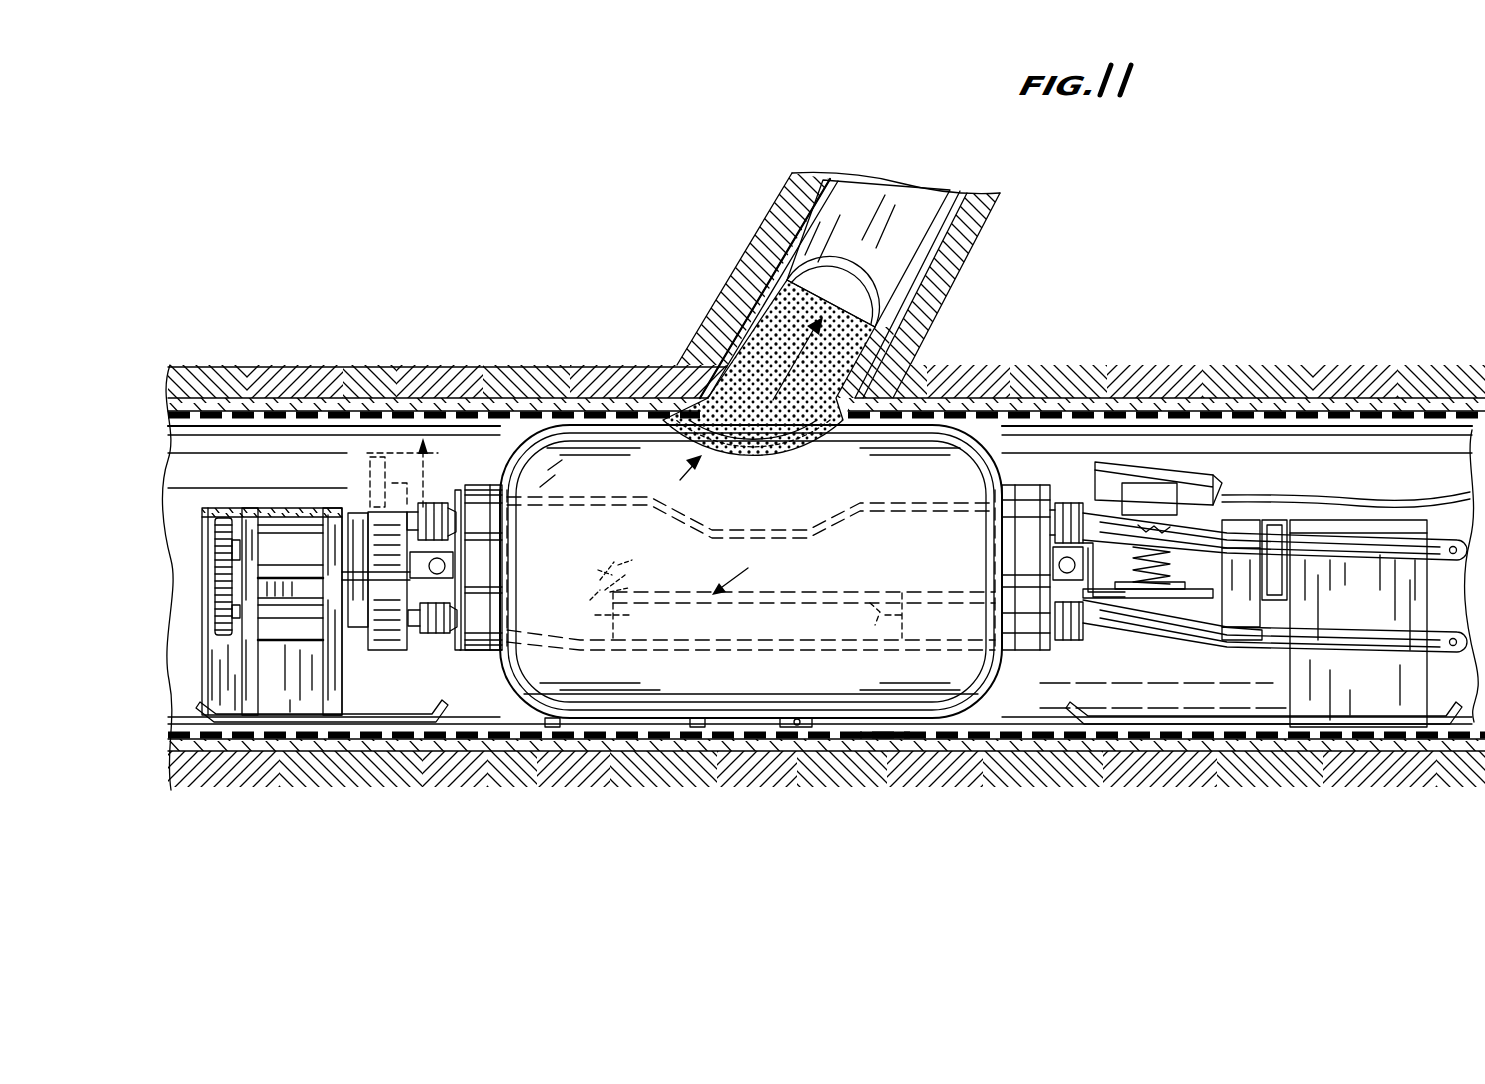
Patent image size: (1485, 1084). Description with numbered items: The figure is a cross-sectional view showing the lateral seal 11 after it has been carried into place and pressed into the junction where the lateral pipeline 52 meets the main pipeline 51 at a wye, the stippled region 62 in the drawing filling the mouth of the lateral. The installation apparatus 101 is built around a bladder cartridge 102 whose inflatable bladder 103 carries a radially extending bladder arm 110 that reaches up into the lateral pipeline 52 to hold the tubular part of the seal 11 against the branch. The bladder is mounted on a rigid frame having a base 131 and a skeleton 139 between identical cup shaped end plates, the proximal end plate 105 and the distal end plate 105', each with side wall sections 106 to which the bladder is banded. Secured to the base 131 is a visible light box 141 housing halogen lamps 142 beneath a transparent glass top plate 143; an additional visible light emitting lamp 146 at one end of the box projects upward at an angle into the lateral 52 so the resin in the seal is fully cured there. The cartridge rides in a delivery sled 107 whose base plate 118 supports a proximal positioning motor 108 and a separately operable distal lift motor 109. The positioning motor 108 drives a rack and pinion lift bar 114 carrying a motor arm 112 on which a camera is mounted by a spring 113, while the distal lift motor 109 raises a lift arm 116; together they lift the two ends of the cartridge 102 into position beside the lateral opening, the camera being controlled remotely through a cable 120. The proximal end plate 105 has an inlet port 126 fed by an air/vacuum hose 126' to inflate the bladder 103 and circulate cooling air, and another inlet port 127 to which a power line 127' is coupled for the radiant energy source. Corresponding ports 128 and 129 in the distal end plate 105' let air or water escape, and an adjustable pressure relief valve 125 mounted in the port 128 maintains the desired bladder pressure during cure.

The lateral seal 11 is at (679, 473).
The main pipeline 51 is at (1067, 410).
The lateral pipeline 52 is at (968, 203).
The plug 62 is at (705, 392).
The apparatus 101 is at (1228, 510).
The bladder cartridge 102 is at (465, 657).
The inflatable bladder 103 is at (607, 491).
The proximal end plate 105 is at (1042, 490).
The distal end plate 105' is at (407, 592).
The side wall sections 106 is at (462, 487).
The delivery sled 107 is at (780, 727).
The proximal positioning motor 108 is at (1323, 713).
The distal lift motor 109 is at (278, 704).
The bladder arm 110 is at (853, 297).
The motor arm 112 is at (1203, 598).
The spring 113 is at (1135, 600).
The lift bar 114 is at (1223, 600).
The lift arm 116 is at (380, 548).
The base plate 118 is at (885, 737).
The cable 120 is at (1438, 494).
The adjustable pressure relief valve 125 is at (385, 535).
The inlet port 126 is at (1008, 431).
The air/vacuum hose 126' is at (1275, 560).
The inlet port 127 is at (1070, 642).
The power line 127' is at (1275, 651).
The port 128 is at (500, 542).
The distal output 129 is at (520, 705).
The base 131 is at (575, 642).
The skeleton 139 is at (716, 494).
The visible light box 141 is at (804, 575).
The lamps 142 is at (795, 592).
The transparent glass top plate 143 is at (880, 585).
The visible light emitting lamp 146 is at (636, 566).